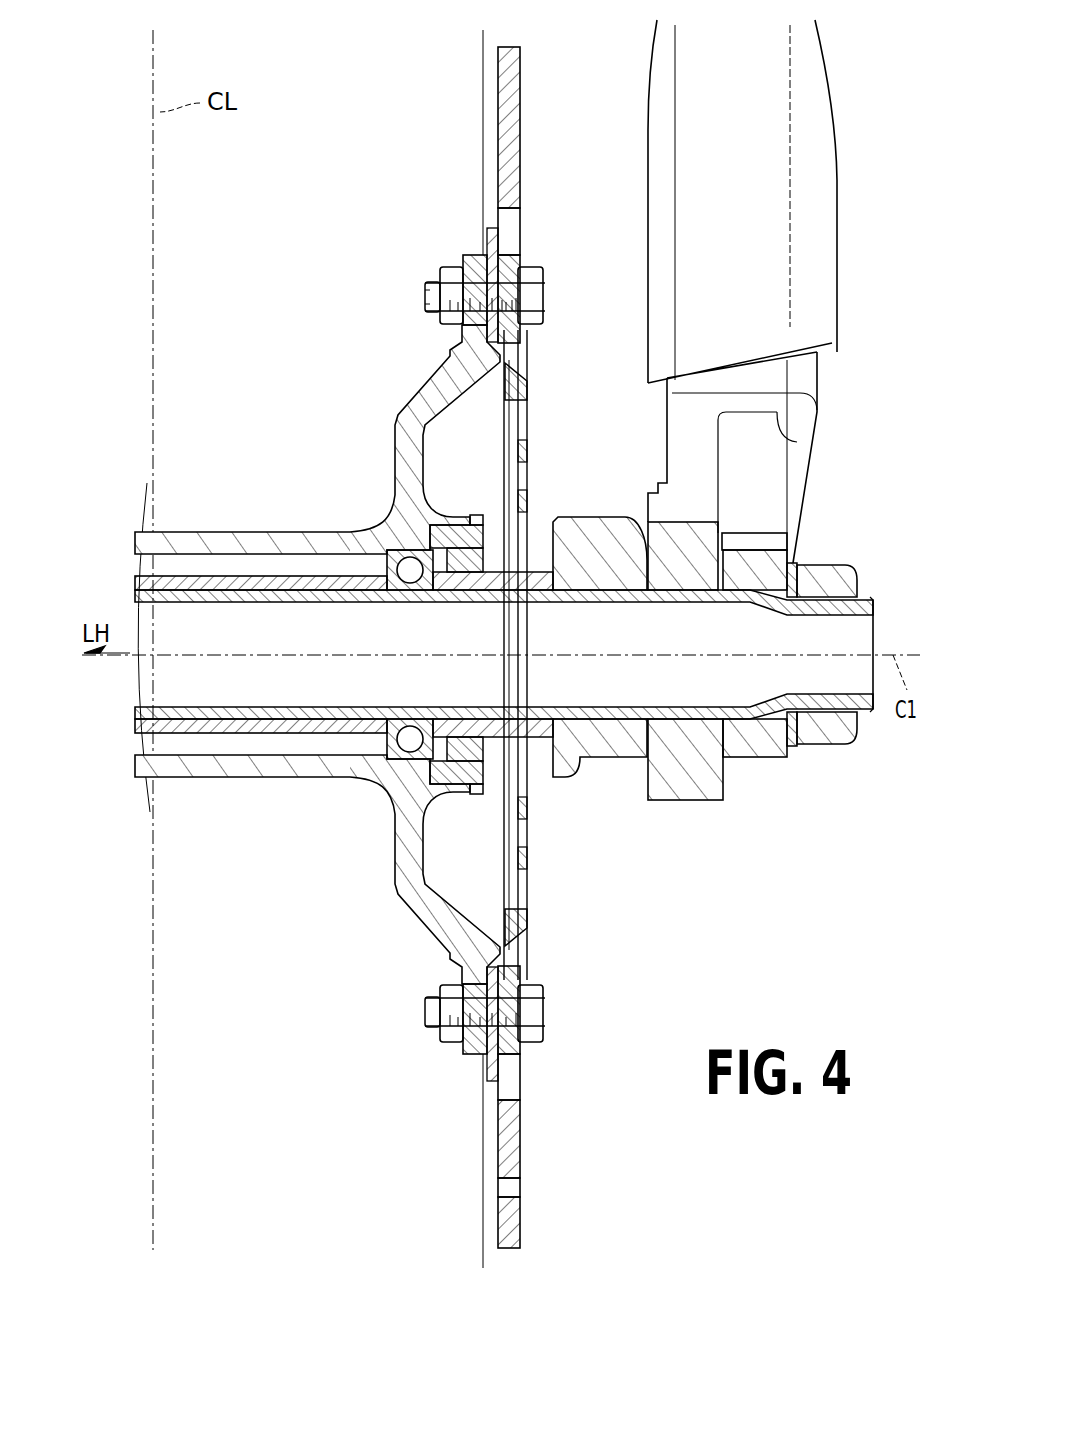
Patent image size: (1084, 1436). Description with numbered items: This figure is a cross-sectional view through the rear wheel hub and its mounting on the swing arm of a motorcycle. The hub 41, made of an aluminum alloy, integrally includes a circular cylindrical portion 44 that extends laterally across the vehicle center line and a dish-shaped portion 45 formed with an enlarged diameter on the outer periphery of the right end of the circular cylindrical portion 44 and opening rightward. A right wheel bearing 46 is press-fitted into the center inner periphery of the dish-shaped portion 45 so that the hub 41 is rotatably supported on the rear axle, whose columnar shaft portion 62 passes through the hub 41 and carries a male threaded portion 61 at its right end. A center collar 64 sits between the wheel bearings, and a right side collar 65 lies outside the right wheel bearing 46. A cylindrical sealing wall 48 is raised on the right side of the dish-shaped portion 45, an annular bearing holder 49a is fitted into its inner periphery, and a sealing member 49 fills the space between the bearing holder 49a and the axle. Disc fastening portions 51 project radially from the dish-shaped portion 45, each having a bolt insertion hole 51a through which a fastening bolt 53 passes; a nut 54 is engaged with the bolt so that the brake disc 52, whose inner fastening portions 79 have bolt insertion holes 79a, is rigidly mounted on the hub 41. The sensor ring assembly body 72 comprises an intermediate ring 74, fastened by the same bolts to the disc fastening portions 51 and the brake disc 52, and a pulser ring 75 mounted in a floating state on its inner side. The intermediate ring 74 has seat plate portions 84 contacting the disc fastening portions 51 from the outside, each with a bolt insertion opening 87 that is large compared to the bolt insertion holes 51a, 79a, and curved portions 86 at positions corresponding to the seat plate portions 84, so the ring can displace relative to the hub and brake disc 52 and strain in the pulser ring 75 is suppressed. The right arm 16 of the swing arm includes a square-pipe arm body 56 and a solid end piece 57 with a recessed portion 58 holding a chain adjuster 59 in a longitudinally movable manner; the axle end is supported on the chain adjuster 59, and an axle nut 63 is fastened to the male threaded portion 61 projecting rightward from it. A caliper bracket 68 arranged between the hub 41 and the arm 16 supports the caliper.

The arm 16 is at (838, 96).
The hub 41 is at (216, 532).
The circular cylindrical portion 44 is at (245, 534).
The dish-shaped portion 45 is at (432, 392).
The right wheel bearing 46 is at (410, 566).
The sealing wall 48 is at (476, 520).
The sealing member 49 is at (468, 548).
The bearing holder 49a is at (465, 526).
The disc fastening portion 51 is at (440, 270).
The bolt insertion hole 51a is at (428, 298).
The brake disc 52 is at (521, 62).
The fastening bolt 53 is at (542, 270).
The nut 54 is at (440, 282).
The arm body 56 is at (826, 252).
The end piece 57 is at (810, 392).
The recessed portion 58 is at (797, 442).
The chain adjuster 59 is at (780, 560).
The male threaded portion 61 is at (870, 608).
The columnar shaft portion 62 is at (290, 754).
The axle nut 63 is at (835, 572).
The center collar 64 is at (252, 770).
The right side collar 65 is at (528, 782).
The caliper bracket 68 is at (600, 762).
The sensor ring assembly body 72 is at (603, 352).
The intermediate ring 74 is at (527, 387).
The pulser ring 75 is at (527, 447).
The fastening portion 79 is at (516, 248).
The bolt insertion hole 79a is at (522, 302).
The seat plate portion 84 is at (492, 240).
The curved portion 86 is at (513, 378).
The bolt insertion opening 87 is at (478, 258).